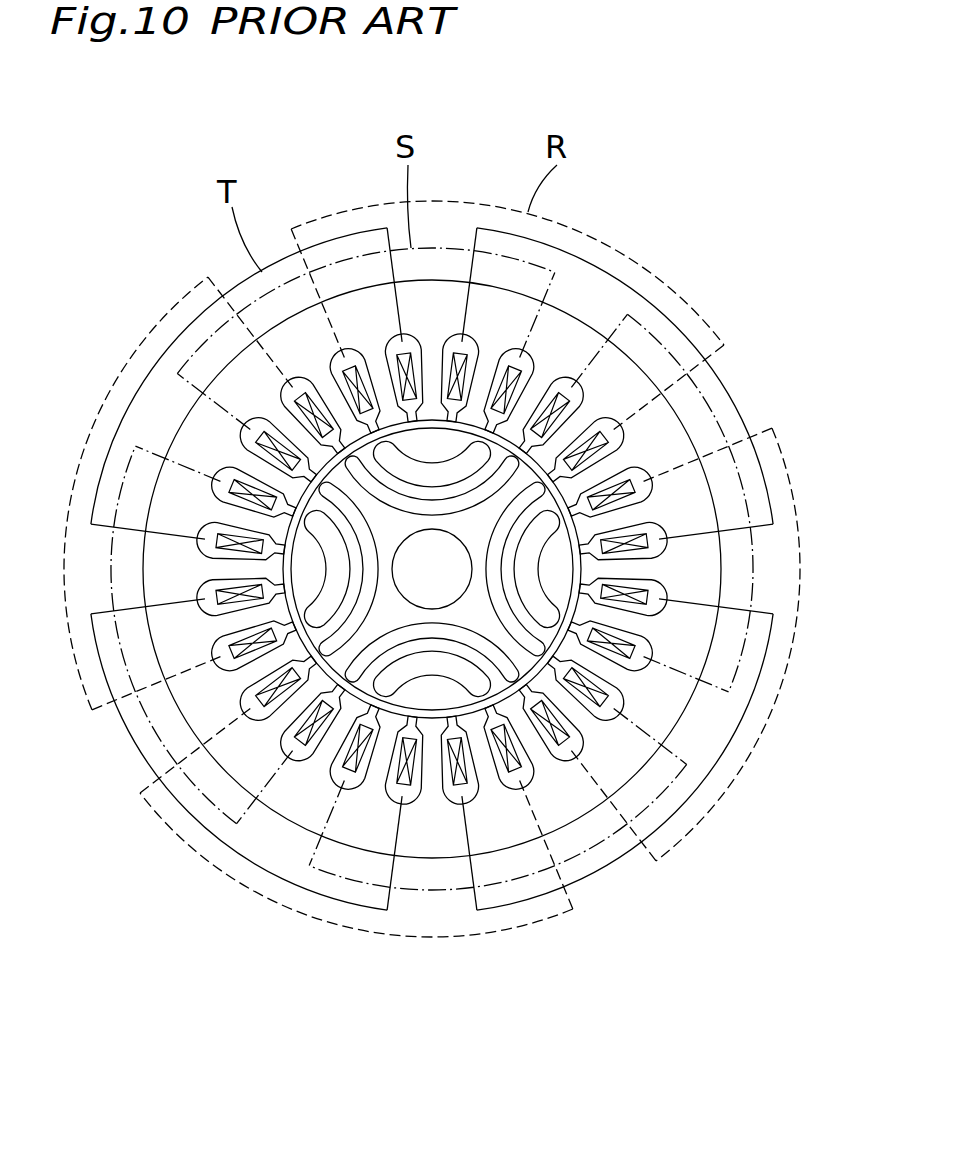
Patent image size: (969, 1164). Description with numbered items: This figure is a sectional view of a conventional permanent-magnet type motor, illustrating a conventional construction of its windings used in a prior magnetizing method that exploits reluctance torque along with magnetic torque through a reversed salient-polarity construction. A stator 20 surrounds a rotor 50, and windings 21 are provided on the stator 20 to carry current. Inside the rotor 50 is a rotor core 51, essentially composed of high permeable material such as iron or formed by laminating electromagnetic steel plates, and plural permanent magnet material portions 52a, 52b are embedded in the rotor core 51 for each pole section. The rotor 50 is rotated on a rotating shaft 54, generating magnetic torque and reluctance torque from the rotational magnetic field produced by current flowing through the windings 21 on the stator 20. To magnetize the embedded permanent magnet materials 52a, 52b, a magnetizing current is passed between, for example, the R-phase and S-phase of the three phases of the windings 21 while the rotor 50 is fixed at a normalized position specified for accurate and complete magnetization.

The stator 20 is at (712, 478).
The windings 21 is at (603, 433).
The rotor 50 is at (578, 573).
The rotor core 51 is at (560, 593).
The permanent magnet material portion 52a is at (480, 690).
The permanent magnet material portion 52b is at (510, 670).
The rotating shaft 54 is at (428, 597).